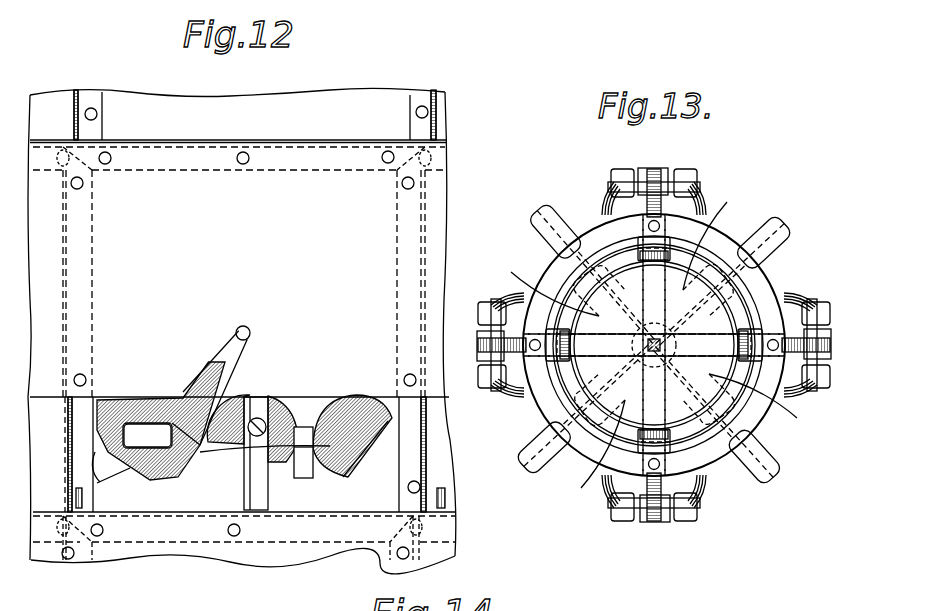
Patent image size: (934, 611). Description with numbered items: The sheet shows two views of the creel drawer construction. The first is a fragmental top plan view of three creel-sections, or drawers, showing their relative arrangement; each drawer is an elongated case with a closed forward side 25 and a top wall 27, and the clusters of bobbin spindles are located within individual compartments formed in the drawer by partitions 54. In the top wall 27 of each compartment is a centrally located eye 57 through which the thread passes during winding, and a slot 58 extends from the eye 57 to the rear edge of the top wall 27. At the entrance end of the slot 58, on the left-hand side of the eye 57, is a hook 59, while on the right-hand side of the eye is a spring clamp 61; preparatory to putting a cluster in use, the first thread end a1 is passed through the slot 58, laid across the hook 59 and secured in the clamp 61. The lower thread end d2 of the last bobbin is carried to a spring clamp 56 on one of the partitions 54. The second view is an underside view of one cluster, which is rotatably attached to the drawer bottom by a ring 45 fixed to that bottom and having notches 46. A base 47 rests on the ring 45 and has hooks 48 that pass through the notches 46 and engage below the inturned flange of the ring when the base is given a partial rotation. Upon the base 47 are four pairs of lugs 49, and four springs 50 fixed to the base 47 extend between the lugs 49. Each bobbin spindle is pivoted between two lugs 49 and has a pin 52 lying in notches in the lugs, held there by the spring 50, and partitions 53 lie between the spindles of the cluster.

In FIG. 12, the closed forward side 25 is at (290, 140).
In FIG. 12, the top wall 27 is at (242, 324).
In FIG. 13, the ring 45 is at (592, 455).
In FIG. 13, the notches 46 is at (705, 220).
In FIG. 13, the base 47 is at (690, 290).
In FIG. 13, the hooks 48 is at (640, 240).
In FIG. 13, the lugs 49 is at (627, 178).
In FIG. 13, the springs 50 is at (795, 330).
In FIG. 13, the pin 52 is at (695, 180).
In FIG. 12, the partitions 53 is at (245, 478).
In FIG. 13, the partitions 53 is at (535, 238).
In FIG. 12, the partitions 54 is at (76, 116).
In FIG. 12, the spring clamp 56 is at (84, 498).
In FIG. 12, the eye 57 is at (243, 327).
In FIG. 12, the slot 58 is at (215, 357).
In FIG. 12, the hook 59 is at (173, 437).
In FIG. 12, the spring clamp 61 is at (303, 430).
In FIG. 12, the upper end of yarn on bobbin a a1 is at (272, 432).
In FIG. 12, the lower end of yarn on bobbin d d2 is at (115, 455).